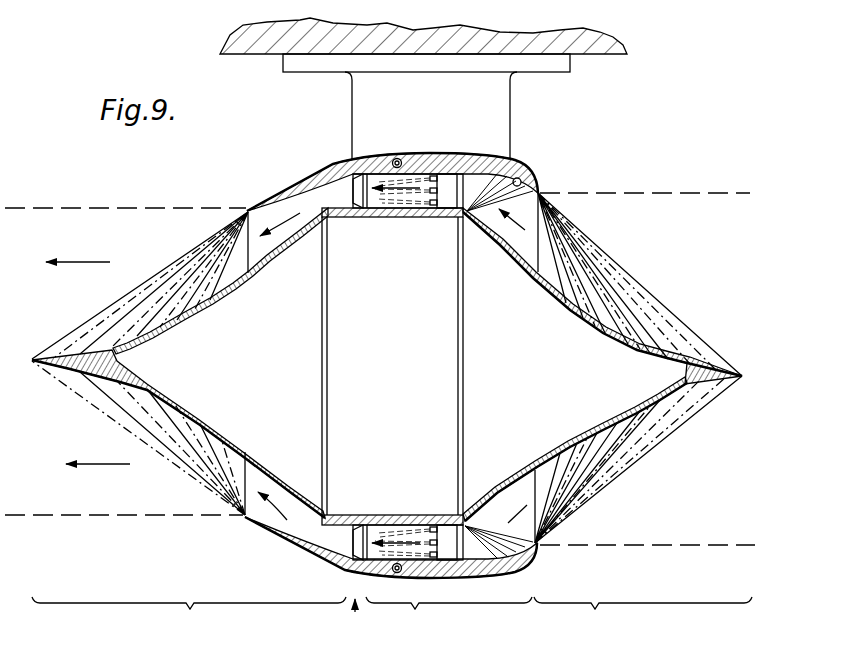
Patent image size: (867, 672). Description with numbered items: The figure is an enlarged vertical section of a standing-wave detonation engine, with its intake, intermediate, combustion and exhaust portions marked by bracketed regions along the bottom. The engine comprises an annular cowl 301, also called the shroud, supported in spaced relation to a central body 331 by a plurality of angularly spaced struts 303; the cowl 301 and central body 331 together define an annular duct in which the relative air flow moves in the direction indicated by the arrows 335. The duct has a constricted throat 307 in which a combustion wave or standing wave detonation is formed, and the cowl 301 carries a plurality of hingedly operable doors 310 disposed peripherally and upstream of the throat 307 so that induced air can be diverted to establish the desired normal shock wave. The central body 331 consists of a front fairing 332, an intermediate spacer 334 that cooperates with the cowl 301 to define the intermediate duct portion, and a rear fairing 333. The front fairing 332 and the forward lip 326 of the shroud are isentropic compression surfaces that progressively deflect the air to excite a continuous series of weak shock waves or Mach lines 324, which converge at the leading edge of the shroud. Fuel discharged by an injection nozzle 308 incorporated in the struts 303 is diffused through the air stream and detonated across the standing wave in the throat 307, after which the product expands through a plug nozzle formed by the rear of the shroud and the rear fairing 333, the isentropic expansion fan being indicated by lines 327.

The annular cowl 301 is at (503, 580).
The struts 303 is at (460, 170).
The constricted throat 307 is at (352, 190).
The injection nozzle 308 is at (430, 192).
The doors 310 is at (413, 160).
The Mach lines 324 is at (614, 284).
The forward lip 326 is at (522, 186).
The expansion fan lines 327 is at (105, 340).
The central body 331 is at (606, 457).
The front fairing 332 is at (614, 420).
The rear fairing 333 is at (243, 452).
The intermediate spacer 334 is at (340, 514).
The arrows 335 is at (373, 192).